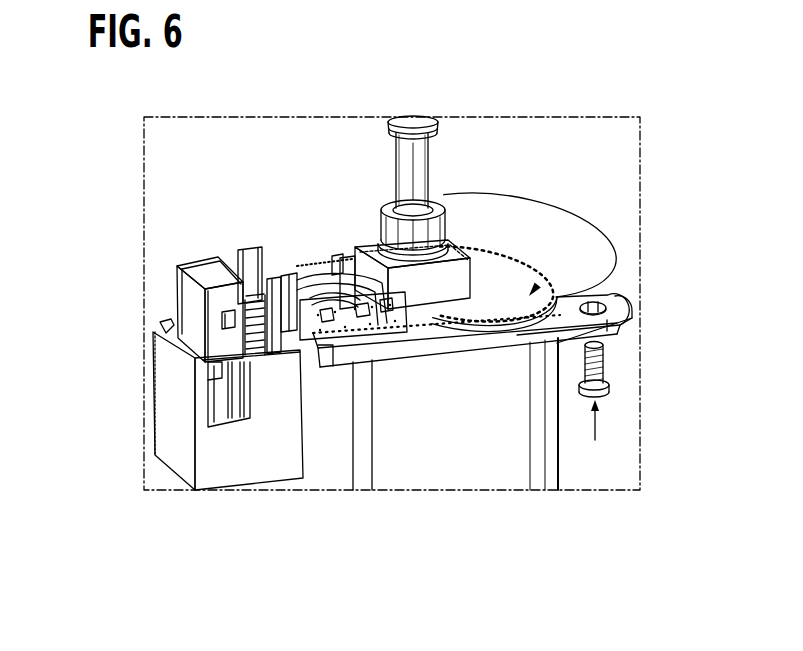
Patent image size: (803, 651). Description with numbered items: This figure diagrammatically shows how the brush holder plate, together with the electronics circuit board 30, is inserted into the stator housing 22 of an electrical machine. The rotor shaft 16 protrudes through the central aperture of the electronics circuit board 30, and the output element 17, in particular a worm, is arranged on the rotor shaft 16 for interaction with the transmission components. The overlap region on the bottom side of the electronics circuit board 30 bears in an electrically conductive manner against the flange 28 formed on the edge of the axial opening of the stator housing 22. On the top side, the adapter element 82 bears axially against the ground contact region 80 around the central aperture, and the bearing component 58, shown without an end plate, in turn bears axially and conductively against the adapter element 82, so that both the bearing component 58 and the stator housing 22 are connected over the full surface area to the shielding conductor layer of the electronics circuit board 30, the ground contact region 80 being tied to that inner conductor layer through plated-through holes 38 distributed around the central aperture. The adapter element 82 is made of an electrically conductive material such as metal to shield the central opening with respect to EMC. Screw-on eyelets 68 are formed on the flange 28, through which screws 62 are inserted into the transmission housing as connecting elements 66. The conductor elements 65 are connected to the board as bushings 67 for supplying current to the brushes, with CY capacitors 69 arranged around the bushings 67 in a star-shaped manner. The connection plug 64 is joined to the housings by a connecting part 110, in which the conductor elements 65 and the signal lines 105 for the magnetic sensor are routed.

The rotor shaft 16 is at (410, 173).
The output element 17 is at (418, 135).
The stator housing 22 is at (460, 465).
The flange 28 is at (616, 298).
The electronics circuit board 30 is at (524, 248).
The plated-through holes 38 is at (487, 300).
The bearing component 58 is at (340, 175).
The screws 62 is at (664, 391).
The connection plug 64 is at (258, 450).
The conductor elements 65 is at (258, 200).
The connecting elements 66 is at (603, 362).
The bushings 67 is at (375, 292).
The screw-on eyelets 68 is at (605, 297).
The CY capacitors 69 is at (380, 297).
The ground contact region 80 is at (450, 300).
The adapter element 82 is at (425, 290).
The signal lines 105 is at (187, 213).
The connecting part 110 is at (183, 302).